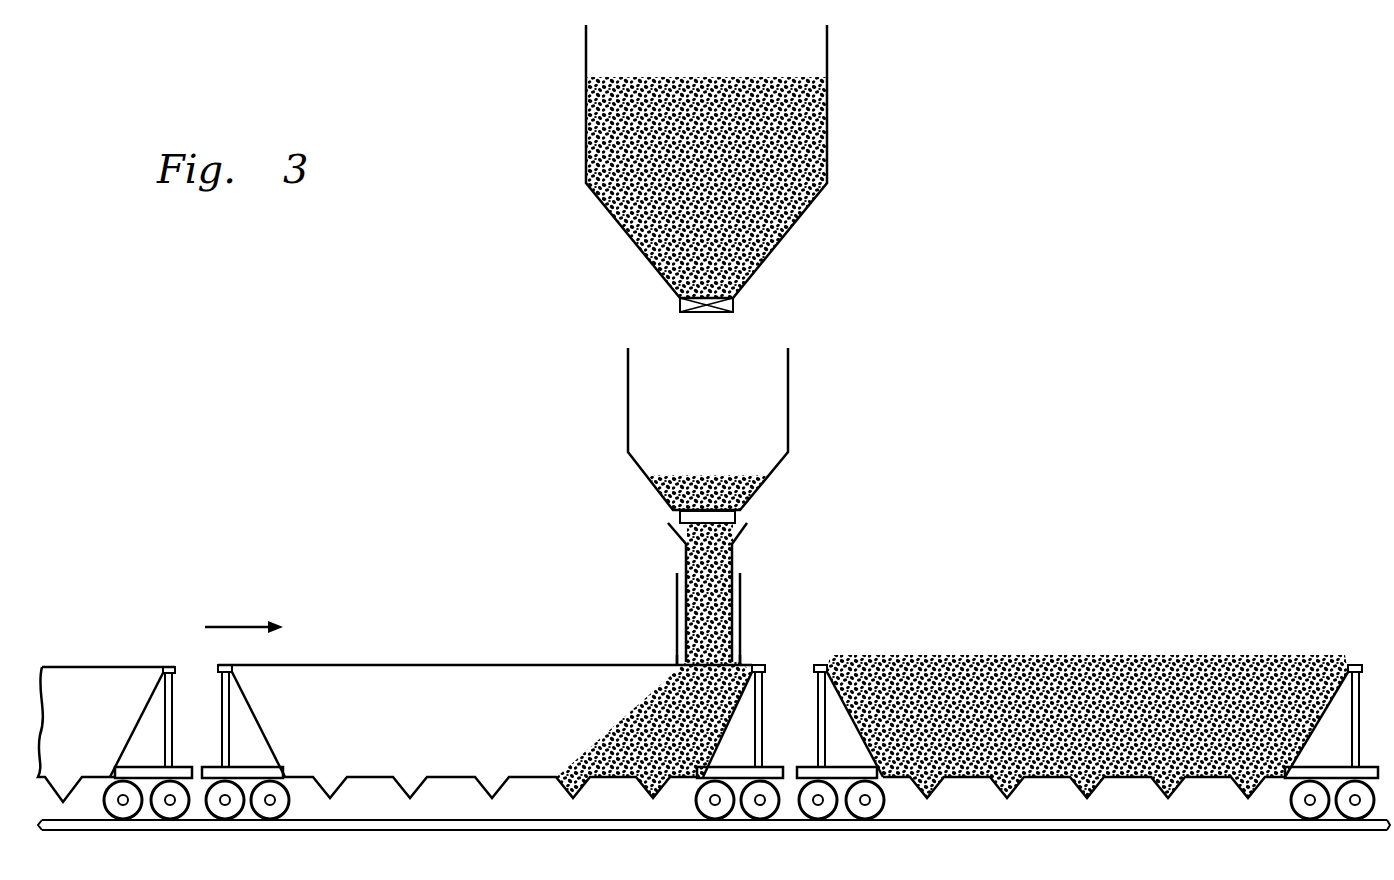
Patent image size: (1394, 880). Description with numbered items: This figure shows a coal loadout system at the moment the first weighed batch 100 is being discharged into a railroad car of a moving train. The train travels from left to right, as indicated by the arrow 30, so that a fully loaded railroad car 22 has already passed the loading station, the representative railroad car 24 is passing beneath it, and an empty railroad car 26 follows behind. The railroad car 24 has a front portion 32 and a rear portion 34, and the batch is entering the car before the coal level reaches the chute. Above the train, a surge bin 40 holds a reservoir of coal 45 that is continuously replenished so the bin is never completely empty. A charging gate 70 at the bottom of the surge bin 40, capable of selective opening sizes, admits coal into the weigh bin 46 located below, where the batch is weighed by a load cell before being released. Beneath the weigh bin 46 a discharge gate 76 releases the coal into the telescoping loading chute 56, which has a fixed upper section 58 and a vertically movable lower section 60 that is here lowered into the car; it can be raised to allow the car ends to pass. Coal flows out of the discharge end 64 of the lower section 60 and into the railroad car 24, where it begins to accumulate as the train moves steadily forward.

The railroad car 22 is at (1020, 657).
The railroad car 24 is at (521, 684).
The railroad car 26 is at (113, 667).
The arrow 30 is at (235, 627).
The front portion 32 is at (762, 640).
The rear portion 34 is at (309, 640).
The surge bin 40 is at (722, 161).
The reservoir of coal 45 is at (628, 172).
The weigh bin 46 is at (710, 429).
The telescoping loading chute 56 is at (723, 591).
The fixed upper section 58 is at (686, 555).
The lower section 60 is at (683, 597).
The discharge end 64 is at (680, 657).
The charging gate 70 is at (735, 305).
The discharge gate 76 is at (736, 518).
The first weighed batch 100 is at (672, 503).